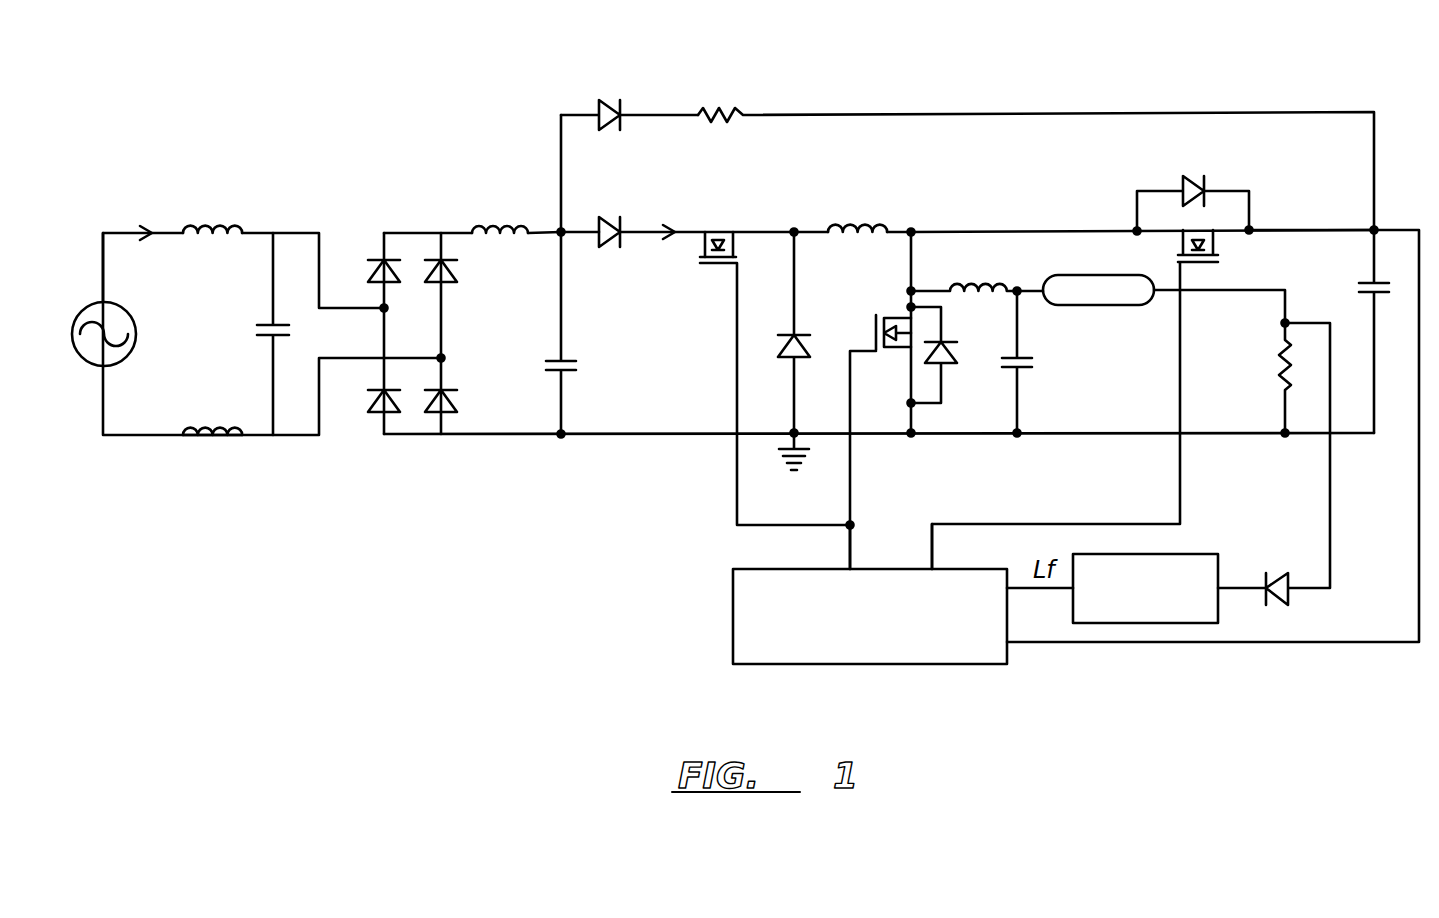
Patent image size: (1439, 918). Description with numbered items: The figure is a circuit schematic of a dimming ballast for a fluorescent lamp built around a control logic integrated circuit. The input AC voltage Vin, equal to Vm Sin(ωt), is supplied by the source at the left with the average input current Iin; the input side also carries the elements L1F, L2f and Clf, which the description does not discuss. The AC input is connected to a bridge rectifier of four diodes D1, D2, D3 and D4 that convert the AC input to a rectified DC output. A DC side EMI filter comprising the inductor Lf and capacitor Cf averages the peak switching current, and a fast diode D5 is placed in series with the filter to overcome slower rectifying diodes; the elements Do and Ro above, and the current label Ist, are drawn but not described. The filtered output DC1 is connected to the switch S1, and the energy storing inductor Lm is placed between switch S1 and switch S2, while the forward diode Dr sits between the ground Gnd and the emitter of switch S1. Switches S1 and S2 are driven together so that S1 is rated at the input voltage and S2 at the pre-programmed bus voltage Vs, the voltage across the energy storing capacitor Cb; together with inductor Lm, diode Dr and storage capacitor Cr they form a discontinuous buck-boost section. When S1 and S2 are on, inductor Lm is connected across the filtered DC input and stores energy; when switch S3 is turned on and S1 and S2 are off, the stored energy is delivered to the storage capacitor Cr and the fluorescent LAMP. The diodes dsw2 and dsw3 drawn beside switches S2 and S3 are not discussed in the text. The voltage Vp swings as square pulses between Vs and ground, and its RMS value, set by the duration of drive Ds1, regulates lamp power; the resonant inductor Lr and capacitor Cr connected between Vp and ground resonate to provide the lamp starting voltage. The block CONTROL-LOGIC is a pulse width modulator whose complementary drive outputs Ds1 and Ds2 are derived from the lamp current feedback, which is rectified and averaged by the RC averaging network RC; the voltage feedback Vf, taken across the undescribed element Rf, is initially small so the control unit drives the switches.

The input AC voltage Vin is at (159, 353).
The average input current Iin is at (144, 216).
The input filter inductor L1F is at (212, 212).
The input filter inductor L2f is at (212, 447).
The input filter capacitor Clf is at (287, 334).
The bridge rectifier diode D1 is at (366, 274).
The bridge rectifier diode D2 is at (461, 274).
The bridge rectifier diode D3 is at (366, 404).
The bridge rectifier diode D4 is at (461, 404).
The filter inductor Lf is at (500, 213).
The filter capacitor Cf is at (578, 274).
The output diode Do is at (629, 99).
The output resistor Ro is at (1036, 149).
The fast diode D5 is at (613, 216).
The storage current Ist is at (670, 212).
The filtered DC output DC1 is at (687, 241).
The control switch S1 is at (775, 404).
The forward diode Dr is at (807, 332).
The ground Gnd is at (811, 468).
The energy storing inductor Lm is at (857, 213).
The pulse voltage Vp is at (969, 313).
The switch S2 is at (880, 404).
The switch diode dsw2 is at (963, 355).
The resonant inductor Lr is at (977, 271).
The storage capacitor Cr is at (1031, 362).
The fluorescent lamp LAMP is at (1164, 299).
The switch diode dsw3 is at (1193, 187).
The switch S3 is at (1094, 399).
The bus voltage Vs is at (1311, 213).
The energy storing capacitor Cb is at (1385, 331).
The feedback resistor Rf is at (1268, 378).
The voltage feedback Vf is at (1274, 464).
The drive output Ds1 is at (878, 541).
The drive output Ds2 is at (961, 546).
The control logic circuit CONTROL-LOGIC is at (870, 616).
The RC averaging circuit RC is at (1112, 588).